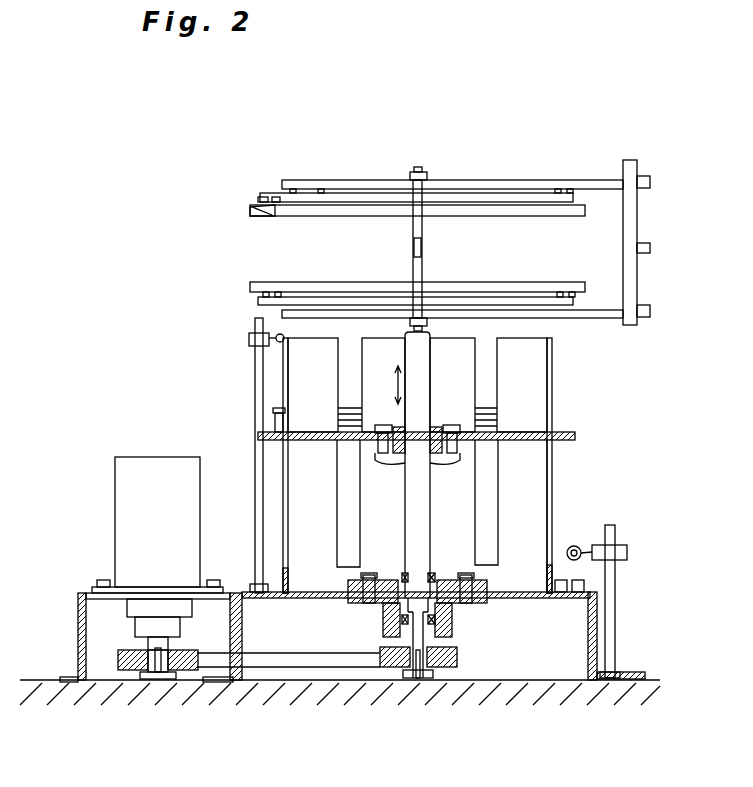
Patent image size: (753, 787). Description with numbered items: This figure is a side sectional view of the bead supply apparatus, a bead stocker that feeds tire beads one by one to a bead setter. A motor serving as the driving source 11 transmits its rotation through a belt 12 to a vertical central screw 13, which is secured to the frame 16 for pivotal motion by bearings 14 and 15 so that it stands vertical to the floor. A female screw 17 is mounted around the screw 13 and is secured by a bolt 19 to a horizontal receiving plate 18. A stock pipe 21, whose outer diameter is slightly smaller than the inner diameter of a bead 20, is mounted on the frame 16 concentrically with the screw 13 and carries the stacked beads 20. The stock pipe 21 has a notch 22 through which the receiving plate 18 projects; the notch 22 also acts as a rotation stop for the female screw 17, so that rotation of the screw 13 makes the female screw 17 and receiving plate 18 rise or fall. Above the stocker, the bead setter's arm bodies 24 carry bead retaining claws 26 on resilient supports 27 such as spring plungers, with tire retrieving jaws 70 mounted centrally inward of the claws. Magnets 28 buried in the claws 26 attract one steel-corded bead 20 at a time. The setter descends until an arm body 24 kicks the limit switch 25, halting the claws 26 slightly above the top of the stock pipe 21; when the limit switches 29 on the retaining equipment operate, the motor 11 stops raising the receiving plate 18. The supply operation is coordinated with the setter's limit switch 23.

The driving source 11 is at (140, 457).
The belt 12 is at (338, 670).
The screw 13 is at (432, 357).
The bearing 14 is at (440, 573).
The bearing 15 is at (450, 613).
The frame 16 is at (317, 598).
The female screw 17 is at (460, 453).
The receiving plate 18 is at (262, 433).
The bolt 19 is at (372, 453).
The bead 20 is at (275, 420).
The stock pipe 21 is at (553, 368).
The notch 22 is at (498, 500).
The limit switch 23 is at (620, 545).
The arm body 24 is at (542, 181).
The limit switch 25 is at (251, 336).
The bead retaining claw 26 is at (356, 181).
The resilient support 27 is at (506, 297).
The magnet 28 is at (250, 210).
The limit switch 29 is at (290, 284).
The tire retrieving jaw 70 is at (380, 288).